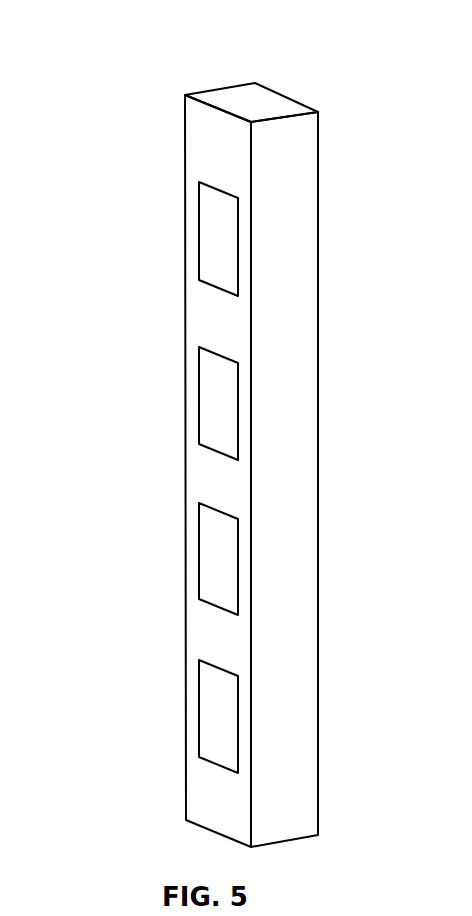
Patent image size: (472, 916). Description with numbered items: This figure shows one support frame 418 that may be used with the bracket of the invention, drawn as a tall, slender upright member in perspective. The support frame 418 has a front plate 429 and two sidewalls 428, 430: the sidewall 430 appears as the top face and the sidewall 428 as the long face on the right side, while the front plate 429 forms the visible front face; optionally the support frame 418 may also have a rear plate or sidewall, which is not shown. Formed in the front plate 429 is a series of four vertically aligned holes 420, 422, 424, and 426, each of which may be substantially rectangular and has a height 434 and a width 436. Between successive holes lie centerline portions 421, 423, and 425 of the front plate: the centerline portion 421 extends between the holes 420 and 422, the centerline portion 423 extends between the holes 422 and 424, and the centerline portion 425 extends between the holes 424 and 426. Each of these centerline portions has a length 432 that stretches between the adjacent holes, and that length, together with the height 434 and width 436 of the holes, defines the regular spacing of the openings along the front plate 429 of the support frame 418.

The support frame 418 is at (118, 42).
The hole 420 is at (212, 272).
The centerline portion 421 is at (212, 328).
The hole 422 is at (222, 403).
The centerline portion 423 is at (212, 483).
The hole 424 is at (218, 558).
The centerline portion 425 is at (218, 643).
The hole 426 is at (218, 716).
The sidewall 428 is at (307, 149).
The front plate 429 is at (198, 148).
The sidewall 430 is at (222, 87).
The length 432 is at (277, 295).
The height 434 is at (163, 180).
The width 436 is at (202, 780).